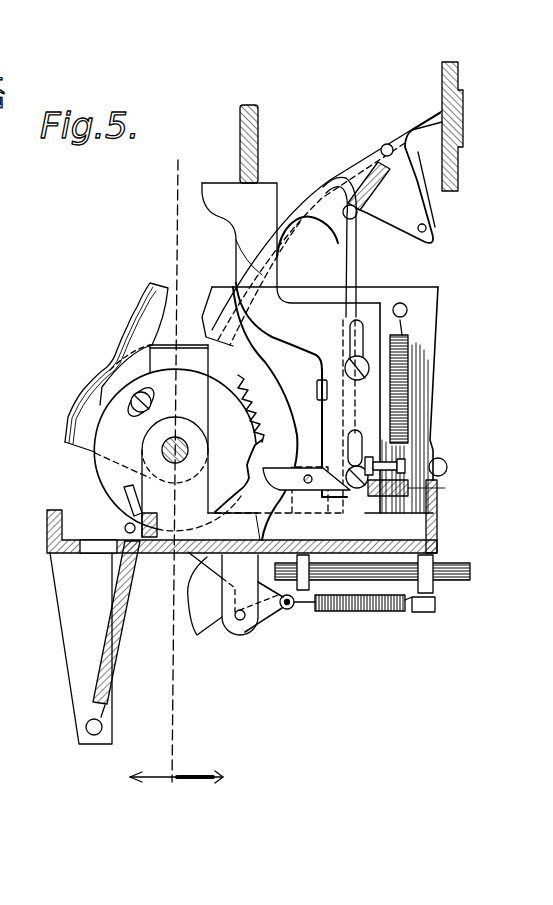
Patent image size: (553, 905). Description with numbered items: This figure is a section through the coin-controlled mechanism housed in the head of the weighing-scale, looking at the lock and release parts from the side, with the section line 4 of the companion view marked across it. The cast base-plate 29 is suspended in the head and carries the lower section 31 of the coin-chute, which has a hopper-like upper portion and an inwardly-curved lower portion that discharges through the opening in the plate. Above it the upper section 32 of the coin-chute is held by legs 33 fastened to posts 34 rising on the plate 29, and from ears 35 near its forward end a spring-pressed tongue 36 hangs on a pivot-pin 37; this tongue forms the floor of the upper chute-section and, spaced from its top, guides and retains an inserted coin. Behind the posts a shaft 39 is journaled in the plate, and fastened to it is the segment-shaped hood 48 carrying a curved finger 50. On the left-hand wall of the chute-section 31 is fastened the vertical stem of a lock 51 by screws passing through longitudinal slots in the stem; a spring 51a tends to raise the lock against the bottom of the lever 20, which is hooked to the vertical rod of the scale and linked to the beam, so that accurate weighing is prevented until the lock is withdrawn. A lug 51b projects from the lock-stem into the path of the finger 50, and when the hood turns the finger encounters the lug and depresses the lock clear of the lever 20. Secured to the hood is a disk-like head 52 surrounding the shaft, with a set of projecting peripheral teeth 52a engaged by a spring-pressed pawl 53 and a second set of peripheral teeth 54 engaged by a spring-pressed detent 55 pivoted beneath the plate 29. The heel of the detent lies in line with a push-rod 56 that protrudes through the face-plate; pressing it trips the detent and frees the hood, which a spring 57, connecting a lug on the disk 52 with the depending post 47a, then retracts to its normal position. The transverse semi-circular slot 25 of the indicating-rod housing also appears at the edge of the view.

The section line 4 is at (176, 793).
The lever 20 is at (262, 134).
The transverse semi-circular slot 25 is at (463, 120).
The base-plate 29 is at (385, 540).
The lower section of coin-chute 31 is at (428, 377).
The upper section of coin-chute 32 is at (318, 188).
The legs 33 is at (350, 280).
The posts 34 is at (327, 527).
The ears 35 is at (391, 178).
The spring-pressed tongue 36 is at (283, 242).
The pivot-pin 37 is at (426, 226).
The shaft 39 is at (162, 441).
The post 47a is at (78, 652).
The segment-shaped hood 48 is at (88, 392).
The curved finger 50 is at (147, 302).
The lock 51 is at (238, 218).
The spring 51a is at (408, 350).
The lug 51b is at (311, 416).
The disk-like head 52 is at (110, 477).
The projecting peripheral teeth 52a is at (246, 372).
The spring-pressed pawl 53 is at (282, 472).
The peripheral teeth 54 is at (250, 470).
The spring-pressed detent 55 is at (196, 557).
The push-rod 56 is at (457, 566).
The spring 57 is at (118, 650).